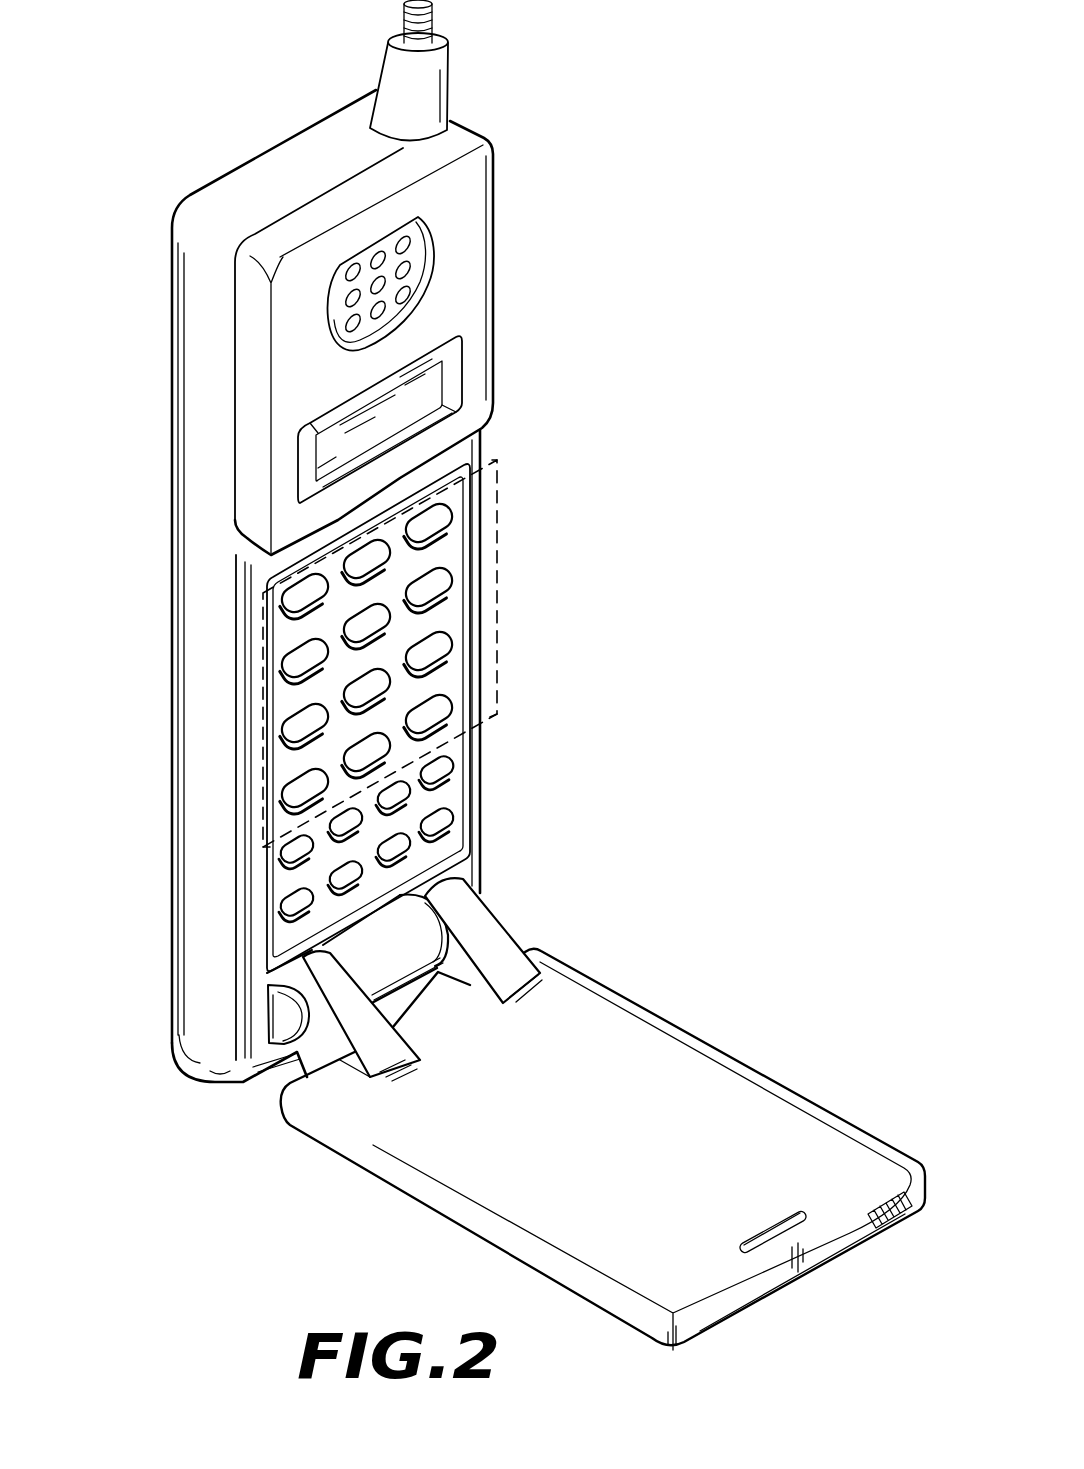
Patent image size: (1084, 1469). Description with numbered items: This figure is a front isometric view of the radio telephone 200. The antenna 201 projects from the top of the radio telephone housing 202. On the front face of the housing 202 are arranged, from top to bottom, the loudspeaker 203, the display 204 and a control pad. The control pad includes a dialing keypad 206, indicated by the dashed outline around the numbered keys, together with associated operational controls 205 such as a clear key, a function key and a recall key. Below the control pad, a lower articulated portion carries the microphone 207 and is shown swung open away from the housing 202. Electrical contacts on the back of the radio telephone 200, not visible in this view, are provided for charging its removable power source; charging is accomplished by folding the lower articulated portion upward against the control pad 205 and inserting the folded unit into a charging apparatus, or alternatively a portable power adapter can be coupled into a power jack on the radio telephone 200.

The radio telephone 200 is at (768, 632).
The antenna 201 is at (440, 24).
The radio telephone housing 202 is at (170, 278).
The loudspeaker 203 is at (408, 301).
The display 204 is at (427, 403).
The operational controls 205 is at (445, 787).
The dialing keypad 206 is at (498, 573).
The microphone 207 is at (781, 1091).